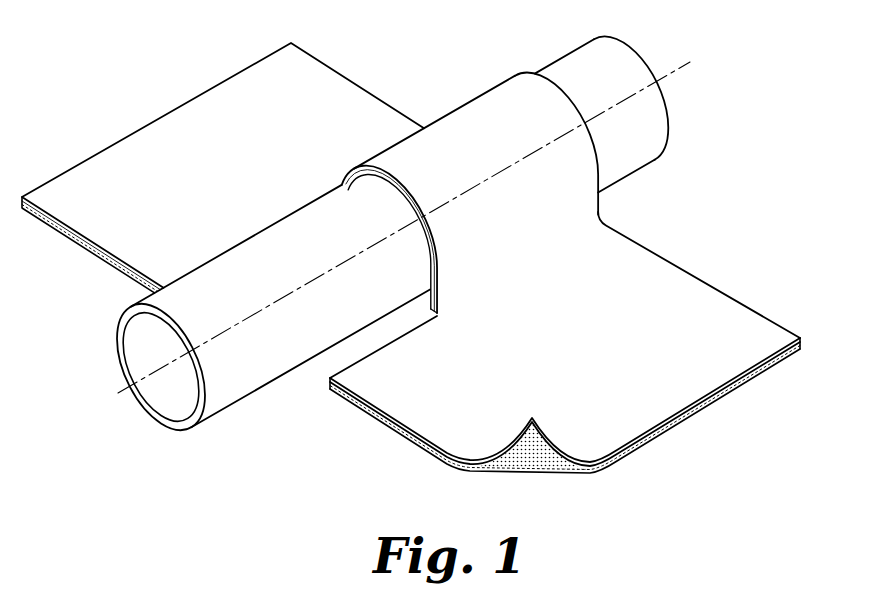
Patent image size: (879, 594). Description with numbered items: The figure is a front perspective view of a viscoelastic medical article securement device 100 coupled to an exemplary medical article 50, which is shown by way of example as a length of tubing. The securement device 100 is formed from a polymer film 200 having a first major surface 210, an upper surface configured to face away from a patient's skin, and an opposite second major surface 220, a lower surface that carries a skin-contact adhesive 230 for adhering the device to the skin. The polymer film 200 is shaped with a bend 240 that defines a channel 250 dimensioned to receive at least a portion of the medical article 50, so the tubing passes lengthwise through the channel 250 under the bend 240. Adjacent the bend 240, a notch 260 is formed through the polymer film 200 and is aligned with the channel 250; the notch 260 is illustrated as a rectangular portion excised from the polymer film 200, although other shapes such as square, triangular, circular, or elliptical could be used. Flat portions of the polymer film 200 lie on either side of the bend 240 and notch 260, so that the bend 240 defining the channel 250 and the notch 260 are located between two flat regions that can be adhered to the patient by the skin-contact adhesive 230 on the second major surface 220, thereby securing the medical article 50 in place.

The medical article 50 is at (652, 132).
The medical article securement device 100 is at (430, 52).
The polymer film 200 is at (702, 279).
The first major surface 210 is at (145, 138).
The second major surface 220 is at (765, 365).
The skin-contact adhesive 230 is at (535, 462).
The bend 240 is at (503, 97).
The channel 250 is at (158, 344).
The notch 260 is at (342, 365).